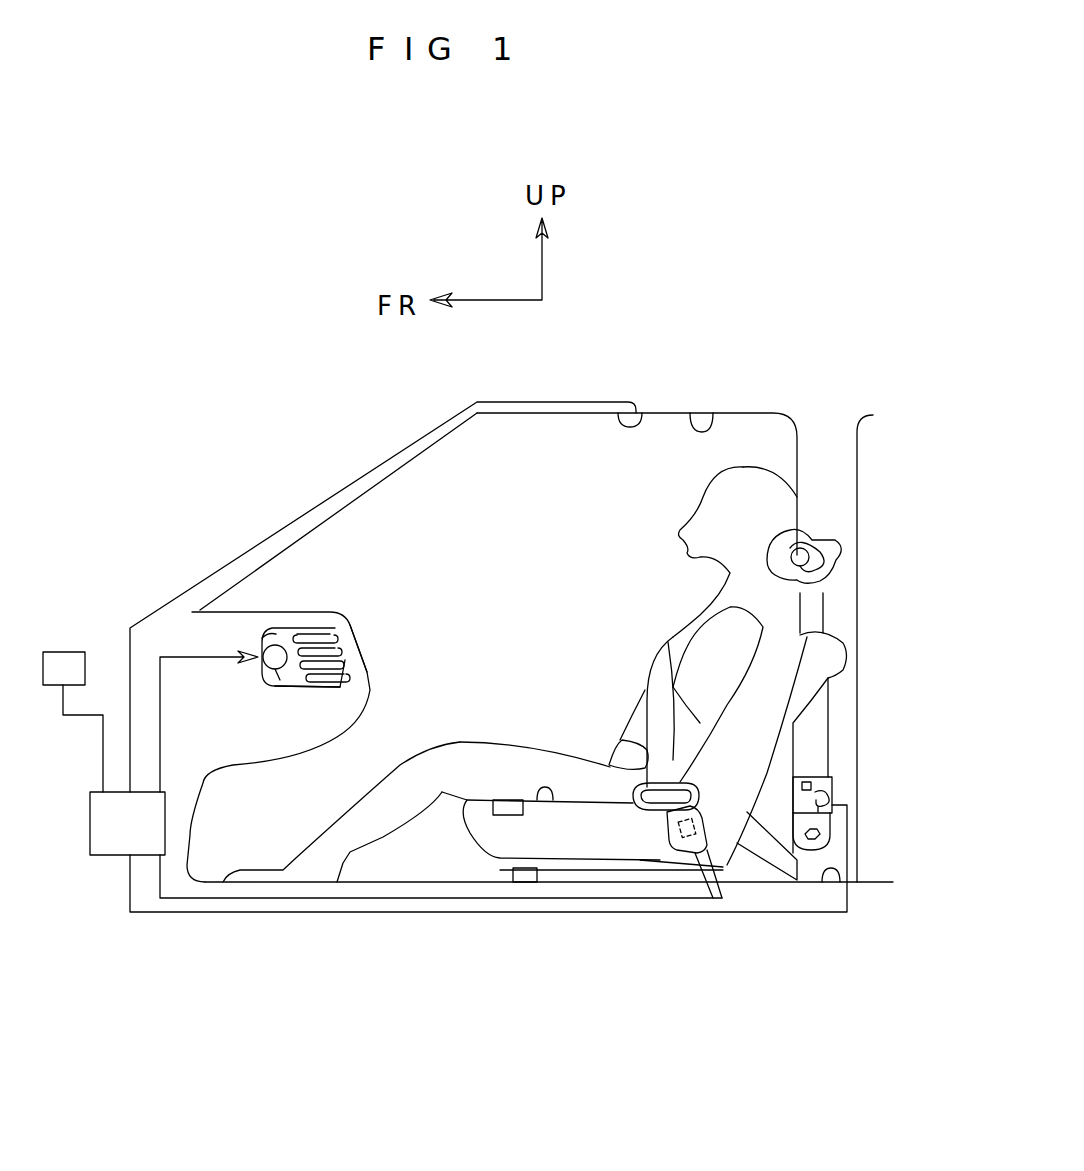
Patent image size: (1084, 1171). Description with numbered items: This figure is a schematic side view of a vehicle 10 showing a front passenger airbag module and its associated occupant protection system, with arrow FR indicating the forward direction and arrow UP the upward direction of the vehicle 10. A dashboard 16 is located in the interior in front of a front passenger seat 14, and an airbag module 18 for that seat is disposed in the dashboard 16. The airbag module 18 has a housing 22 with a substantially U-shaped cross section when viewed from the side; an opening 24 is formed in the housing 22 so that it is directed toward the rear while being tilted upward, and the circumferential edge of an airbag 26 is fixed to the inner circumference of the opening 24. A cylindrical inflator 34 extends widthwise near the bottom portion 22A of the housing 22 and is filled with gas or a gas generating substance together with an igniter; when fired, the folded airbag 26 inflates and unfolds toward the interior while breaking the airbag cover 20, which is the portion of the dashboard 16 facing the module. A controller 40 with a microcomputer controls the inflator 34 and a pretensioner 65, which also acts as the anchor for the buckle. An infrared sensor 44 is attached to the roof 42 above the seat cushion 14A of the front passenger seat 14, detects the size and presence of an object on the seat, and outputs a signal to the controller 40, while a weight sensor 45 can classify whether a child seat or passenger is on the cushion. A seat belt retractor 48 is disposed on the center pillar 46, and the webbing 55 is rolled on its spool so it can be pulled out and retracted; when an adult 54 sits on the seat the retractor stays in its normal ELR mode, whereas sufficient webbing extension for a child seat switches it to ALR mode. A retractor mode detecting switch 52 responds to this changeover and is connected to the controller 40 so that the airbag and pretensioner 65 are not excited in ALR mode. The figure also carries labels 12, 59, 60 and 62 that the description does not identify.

The vehicle 10 is at (366, 445).
The vehicle cabin 12 is at (532, 504).
The front passenger seat 14 is at (845, 668).
The seat cushion 14A is at (533, 793).
The dashboard 16 is at (345, 618).
The airbag module 18 is at (320, 684).
The airbag cover 20 is at (365, 655).
The housing 22 is at (256, 680).
The bottom portion 22A is at (263, 638).
The opening 24 is at (370, 670).
The airbag 26 is at (320, 634).
The inflator 34 is at (280, 680).
The controller 40 is at (103, 858).
The roof 42 is at (692, 415).
The infrared sensor 44 is at (632, 425).
The weight sensor 45 is at (507, 817).
The center pillar 46 is at (843, 596).
The seat belt retractor 48 is at (832, 779).
The retractor mode detecting switch 52 is at (832, 789).
The adult 54 is at (713, 603).
The webbing 55 is at (810, 540).
The buckle 59 is at (715, 808).
The seat cushion 60 is at (582, 831).
The seat back frame 62 is at (813, 777).
The pretensioner 65 is at (697, 850).